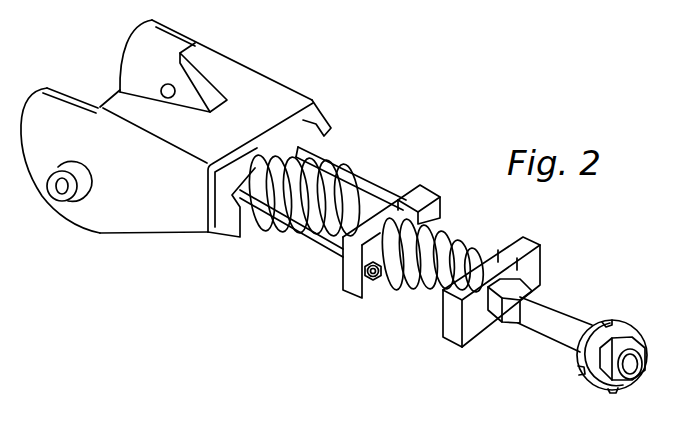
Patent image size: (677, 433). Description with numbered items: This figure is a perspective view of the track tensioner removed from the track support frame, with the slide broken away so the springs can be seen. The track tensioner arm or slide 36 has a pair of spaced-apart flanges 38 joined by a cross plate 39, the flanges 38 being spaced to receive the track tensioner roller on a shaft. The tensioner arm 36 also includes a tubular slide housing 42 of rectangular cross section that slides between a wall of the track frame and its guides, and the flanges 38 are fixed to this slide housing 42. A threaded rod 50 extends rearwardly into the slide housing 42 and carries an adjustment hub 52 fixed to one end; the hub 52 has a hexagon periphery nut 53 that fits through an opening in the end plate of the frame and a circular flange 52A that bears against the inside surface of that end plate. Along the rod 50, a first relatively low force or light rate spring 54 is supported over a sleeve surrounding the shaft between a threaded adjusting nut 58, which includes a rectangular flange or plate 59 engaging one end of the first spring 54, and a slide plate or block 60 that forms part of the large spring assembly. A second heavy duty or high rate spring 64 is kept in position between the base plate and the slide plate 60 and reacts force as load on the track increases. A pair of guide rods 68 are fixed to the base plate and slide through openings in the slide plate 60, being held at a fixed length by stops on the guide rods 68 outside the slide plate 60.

The track tensioner arm or slide 36 is at (268, 247).
The flanges 38 is at (155, 45).
The cross plate 39 is at (248, 84).
The tubular slide housing 42 is at (222, 205).
The threaded rod 50 is at (538, 313).
The adjustment hub 52 is at (598, 382).
The circular flange 52A is at (583, 378).
The hexagon periphery nut 53 is at (633, 346).
The first spring 54 is at (411, 267).
The threaded adjusting nut 58 is at (533, 292).
The rectangular flange or plate 59 is at (448, 311).
The slide plate or block 60 is at (436, 205).
The second spring 64 is at (292, 172).
The guide rods 68 is at (343, 168).